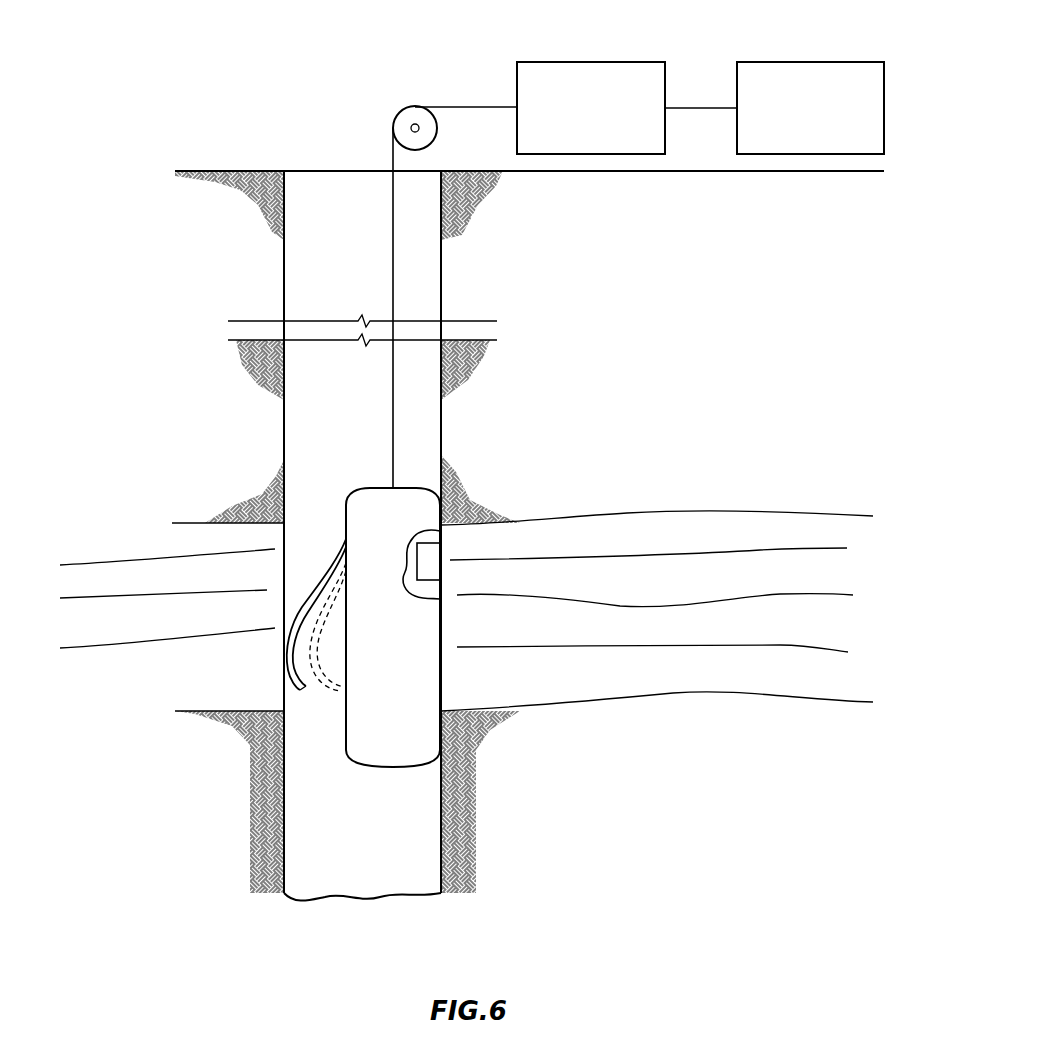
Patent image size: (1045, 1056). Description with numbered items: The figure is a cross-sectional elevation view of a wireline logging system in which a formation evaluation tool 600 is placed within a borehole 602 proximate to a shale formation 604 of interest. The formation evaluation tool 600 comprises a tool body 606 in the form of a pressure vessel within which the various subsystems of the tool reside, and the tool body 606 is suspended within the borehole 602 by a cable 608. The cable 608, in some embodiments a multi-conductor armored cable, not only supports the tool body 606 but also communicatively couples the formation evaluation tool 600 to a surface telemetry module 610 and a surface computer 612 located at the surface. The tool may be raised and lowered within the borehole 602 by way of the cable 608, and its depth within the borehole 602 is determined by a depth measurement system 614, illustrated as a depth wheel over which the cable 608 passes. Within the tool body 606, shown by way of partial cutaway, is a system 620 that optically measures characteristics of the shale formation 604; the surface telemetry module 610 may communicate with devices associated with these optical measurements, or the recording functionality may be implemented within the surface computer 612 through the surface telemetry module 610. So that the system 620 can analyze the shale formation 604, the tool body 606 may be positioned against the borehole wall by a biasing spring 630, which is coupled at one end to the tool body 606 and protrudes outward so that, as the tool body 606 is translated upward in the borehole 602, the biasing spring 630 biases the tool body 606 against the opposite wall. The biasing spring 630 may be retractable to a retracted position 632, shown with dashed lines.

The formation evaluation tool 600 is at (360, 467).
The borehole 602 is at (332, 850).
The shale formation 604 is at (794, 626).
The tool body 606 is at (419, 681).
The cable 608 is at (393, 268).
The surface telemetry module 610 is at (627, 62).
The surface computer 612 is at (835, 62).
The depth measurement system 614 is at (437, 126).
The system 620 is at (445, 548).
The biasing spring 630 is at (330, 578).
The retracted position 632 is at (340, 621).